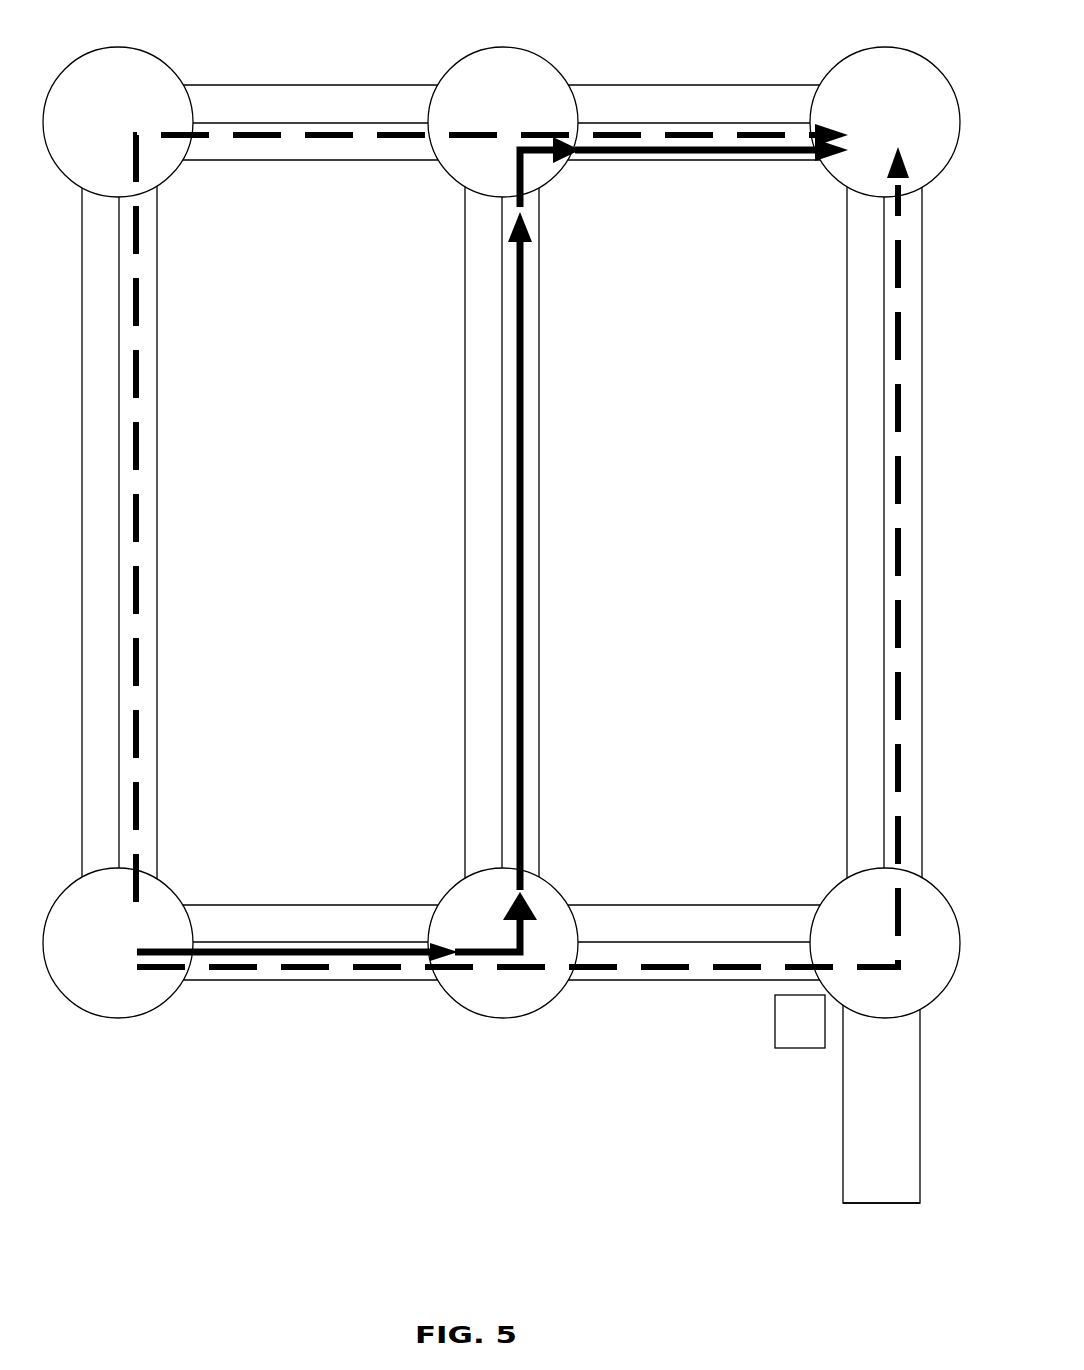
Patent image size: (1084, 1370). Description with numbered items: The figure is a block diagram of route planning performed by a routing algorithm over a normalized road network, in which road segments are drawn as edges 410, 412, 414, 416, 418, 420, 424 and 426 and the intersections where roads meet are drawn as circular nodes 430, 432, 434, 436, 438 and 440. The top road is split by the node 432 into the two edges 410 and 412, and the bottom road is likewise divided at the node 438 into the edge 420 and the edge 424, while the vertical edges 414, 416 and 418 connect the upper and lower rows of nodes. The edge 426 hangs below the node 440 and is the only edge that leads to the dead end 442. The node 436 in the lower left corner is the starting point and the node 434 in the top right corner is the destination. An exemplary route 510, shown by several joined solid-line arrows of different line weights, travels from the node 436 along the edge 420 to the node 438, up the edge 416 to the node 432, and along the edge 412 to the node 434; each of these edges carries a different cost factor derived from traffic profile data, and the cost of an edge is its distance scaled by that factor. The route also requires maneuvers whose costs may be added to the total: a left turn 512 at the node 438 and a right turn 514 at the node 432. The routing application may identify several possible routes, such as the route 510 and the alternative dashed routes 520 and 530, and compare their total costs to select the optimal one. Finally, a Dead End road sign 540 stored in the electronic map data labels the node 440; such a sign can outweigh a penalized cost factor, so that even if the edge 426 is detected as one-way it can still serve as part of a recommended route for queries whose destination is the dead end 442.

The edge 410 is at (290, 85).
The edge 412 is at (680, 85).
The edge 414 is at (158, 487).
The edge 416 is at (540, 483).
The edge 418 is at (846, 470).
The edge 420 is at (293, 981).
The edge 424 is at (693, 981).
The edge 426 is at (842, 1095).
The node 430 is at (140, 134).
The node 432 is at (522, 120).
The node 434 is at (903, 135).
The node 436 is at (140, 954).
The node 438 is at (452, 885).
The node 440 is at (878, 935).
The dead end 442 is at (877, 1204).
The route 510 is at (522, 575).
The left turn 512 is at (528, 898).
The right turn 514 is at (528, 172).
The route 520 is at (140, 363).
The route 530 is at (893, 298).
The road sign 540 is at (820, 1036).